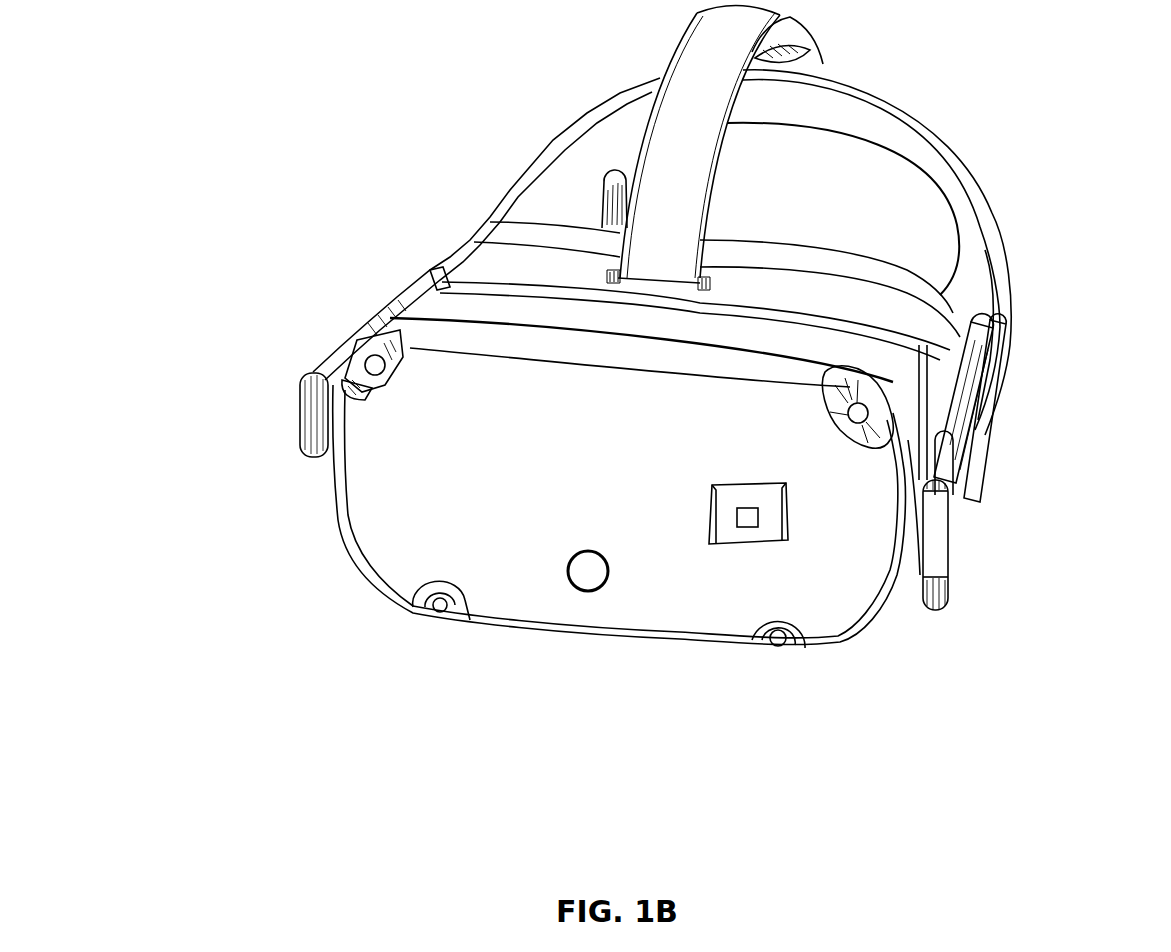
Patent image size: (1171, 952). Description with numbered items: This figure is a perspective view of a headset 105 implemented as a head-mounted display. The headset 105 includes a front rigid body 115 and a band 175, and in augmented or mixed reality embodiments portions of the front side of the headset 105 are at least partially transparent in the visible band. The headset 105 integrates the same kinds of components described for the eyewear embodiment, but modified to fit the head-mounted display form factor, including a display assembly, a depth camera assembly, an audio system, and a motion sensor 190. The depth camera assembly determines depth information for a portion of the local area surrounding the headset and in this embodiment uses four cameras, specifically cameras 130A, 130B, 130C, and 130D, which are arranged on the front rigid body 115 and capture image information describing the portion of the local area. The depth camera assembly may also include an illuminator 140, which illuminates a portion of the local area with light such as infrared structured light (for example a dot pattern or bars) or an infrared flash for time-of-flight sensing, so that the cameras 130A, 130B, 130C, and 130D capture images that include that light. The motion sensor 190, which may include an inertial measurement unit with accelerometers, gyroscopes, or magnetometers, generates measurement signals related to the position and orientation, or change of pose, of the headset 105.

The headset 105 is at (293, 640).
The front rigid body 115 is at (443, 333).
The camera 130A is at (368, 364).
The camera 130B is at (868, 410).
The camera 130C is at (440, 604).
The camera 130D is at (786, 640).
The illuminator 140 is at (575, 591).
The band 175 is at (943, 152).
The motion sensor 190 is at (780, 513).